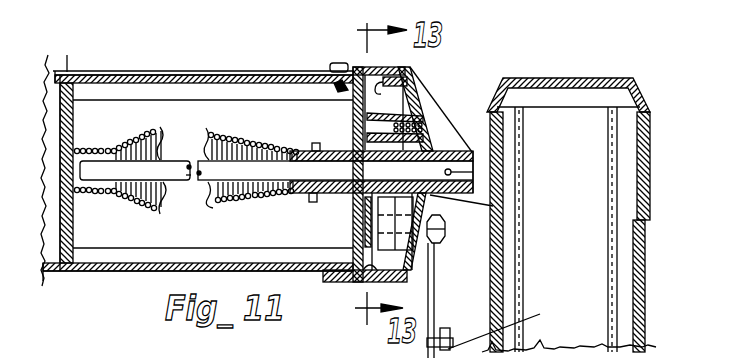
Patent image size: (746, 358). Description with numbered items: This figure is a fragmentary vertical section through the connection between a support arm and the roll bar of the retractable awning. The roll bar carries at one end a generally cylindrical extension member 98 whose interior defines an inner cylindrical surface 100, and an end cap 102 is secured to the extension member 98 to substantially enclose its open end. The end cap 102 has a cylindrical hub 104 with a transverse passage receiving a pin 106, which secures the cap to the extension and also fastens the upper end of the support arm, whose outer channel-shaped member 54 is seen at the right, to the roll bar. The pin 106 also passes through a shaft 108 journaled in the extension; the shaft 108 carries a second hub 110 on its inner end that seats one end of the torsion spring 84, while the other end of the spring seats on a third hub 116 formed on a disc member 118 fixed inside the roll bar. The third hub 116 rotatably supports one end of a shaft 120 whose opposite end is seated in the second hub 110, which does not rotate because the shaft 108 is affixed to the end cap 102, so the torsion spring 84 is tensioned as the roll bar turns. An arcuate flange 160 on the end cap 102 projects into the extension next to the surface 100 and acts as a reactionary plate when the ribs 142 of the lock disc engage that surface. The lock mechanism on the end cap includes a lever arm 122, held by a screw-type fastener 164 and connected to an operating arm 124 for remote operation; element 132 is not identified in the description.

The outer channel-shaped member 54 is at (627, 268).
The torsion spring 84 is at (213, 133).
The extension member 98 is at (360, 66).
The inner cylindrical surface 100 is at (373, 268).
The end cap 102 is at (410, 86).
The cylindrical hub 104 is at (468, 135).
The pin 106 is at (476, 168).
The shaft 108 is at (352, 193).
The second hub 110 is at (285, 150).
The third hub 116 is at (135, 146).
The disc member 118 is at (77, 105).
The shaft 120 is at (182, 185).
The lever arm 122 is at (438, 292).
The operating arm 124 is at (514, 326).
The member 132 is at (391, 352).
The ribs 142 is at (287, 352).
The arcuate flange 160 is at (392, 67).
The screw-type fastener 164 is at (445, 225).